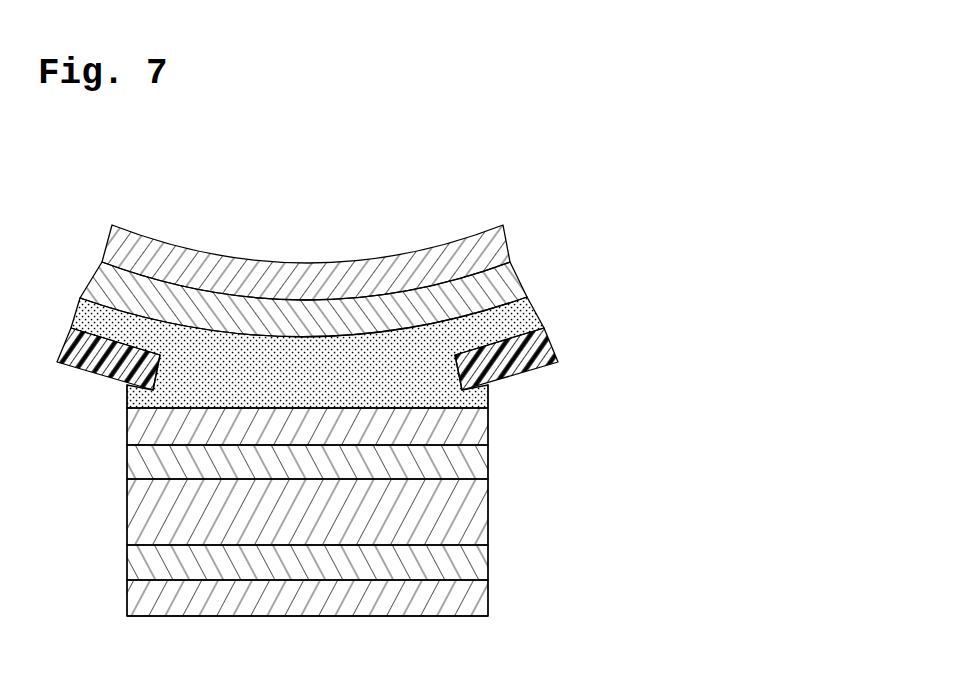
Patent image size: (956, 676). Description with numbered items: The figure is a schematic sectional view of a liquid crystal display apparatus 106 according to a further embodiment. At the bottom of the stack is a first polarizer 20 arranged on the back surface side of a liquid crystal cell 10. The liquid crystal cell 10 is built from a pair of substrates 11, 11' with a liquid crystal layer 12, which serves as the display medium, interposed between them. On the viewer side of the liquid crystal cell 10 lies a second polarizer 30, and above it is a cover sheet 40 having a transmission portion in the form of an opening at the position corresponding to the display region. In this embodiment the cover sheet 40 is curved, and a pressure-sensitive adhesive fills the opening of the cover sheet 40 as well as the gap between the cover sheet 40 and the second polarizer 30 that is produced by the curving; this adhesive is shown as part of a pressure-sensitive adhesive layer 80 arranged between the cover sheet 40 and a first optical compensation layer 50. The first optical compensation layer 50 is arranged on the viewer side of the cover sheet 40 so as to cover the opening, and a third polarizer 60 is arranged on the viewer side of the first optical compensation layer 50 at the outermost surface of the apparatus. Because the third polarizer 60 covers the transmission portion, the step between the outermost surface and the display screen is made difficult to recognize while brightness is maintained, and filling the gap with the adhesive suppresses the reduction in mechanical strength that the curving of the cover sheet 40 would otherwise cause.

The liquid crystal display apparatus 106 is at (463, 156).
The third polarizer 60 is at (511, 237).
The first optical compensation layer 50 is at (527, 273).
The pressure-sensitive adhesive layer 80 is at (540, 307).
The cover sheet 40 is at (555, 338).
The second polarizer 30 is at (488, 425).
The liquid crystal cell 10 is at (364, 512).
The substrate 11 is at (343, 462).
The liquid crystal layer 12 is at (488, 510).
The substrate 11' is at (345, 562).
The first polarizer 20 is at (488, 598).